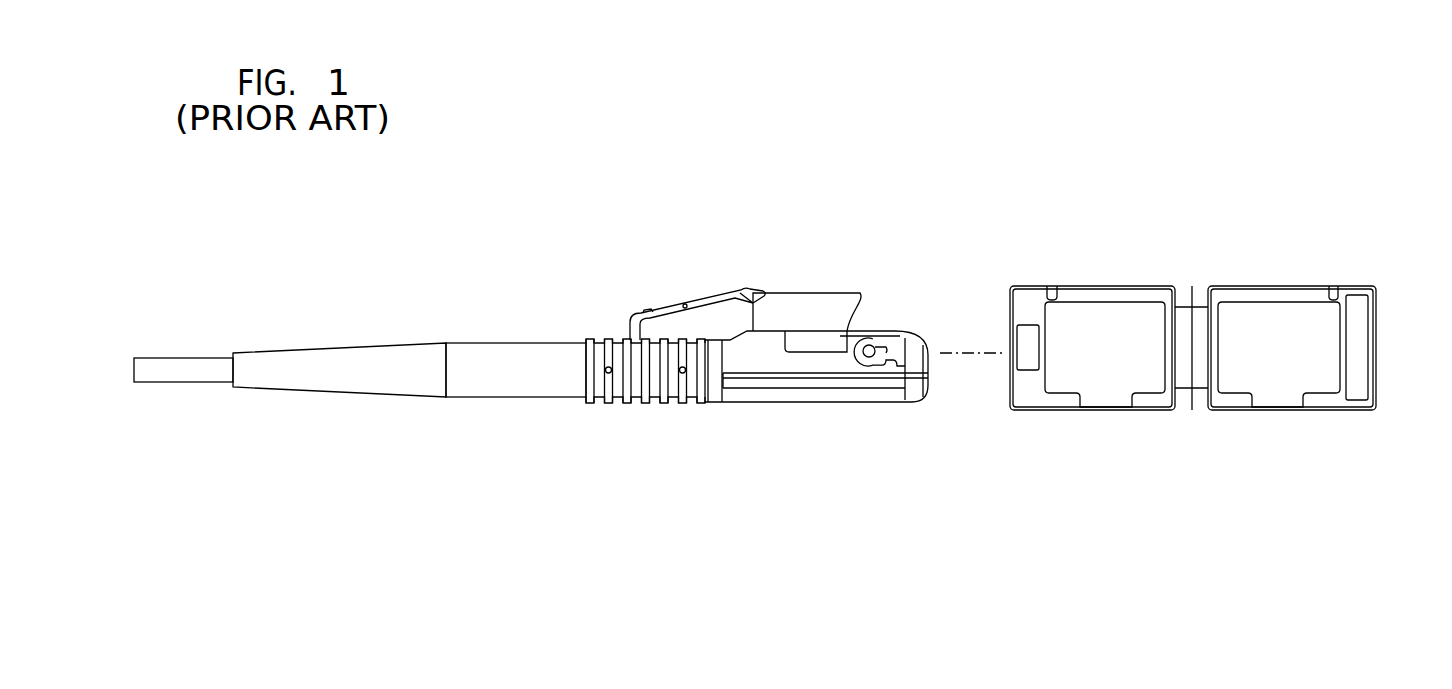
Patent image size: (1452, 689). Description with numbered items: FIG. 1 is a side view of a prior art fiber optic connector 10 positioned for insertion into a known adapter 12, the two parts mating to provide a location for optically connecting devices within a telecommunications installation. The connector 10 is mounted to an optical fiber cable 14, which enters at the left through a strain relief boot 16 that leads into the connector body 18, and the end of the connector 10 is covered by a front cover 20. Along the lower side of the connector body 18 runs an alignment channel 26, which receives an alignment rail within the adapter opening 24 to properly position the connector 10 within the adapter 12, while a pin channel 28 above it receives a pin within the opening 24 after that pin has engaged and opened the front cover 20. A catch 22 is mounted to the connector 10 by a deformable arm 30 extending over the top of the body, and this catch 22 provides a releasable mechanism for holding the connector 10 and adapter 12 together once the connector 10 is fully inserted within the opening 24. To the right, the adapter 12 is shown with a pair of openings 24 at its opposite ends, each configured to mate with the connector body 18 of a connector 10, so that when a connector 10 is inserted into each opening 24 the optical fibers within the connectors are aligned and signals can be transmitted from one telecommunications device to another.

The fiber optic connector 10 is at (632, 441).
The adapter 12 is at (1191, 373).
The optical fiber cable 14 is at (202, 373).
The strain relief boot 16 is at (472, 383).
The connector body 18 is at (827, 349).
The front cover 20 is at (917, 383).
The catch 22 is at (682, 275).
The openings 24 is at (984, 294).
The alignment channel 26 is at (803, 382).
The pin channel 28 is at (812, 343).
The deformable arm 30 is at (649, 311).